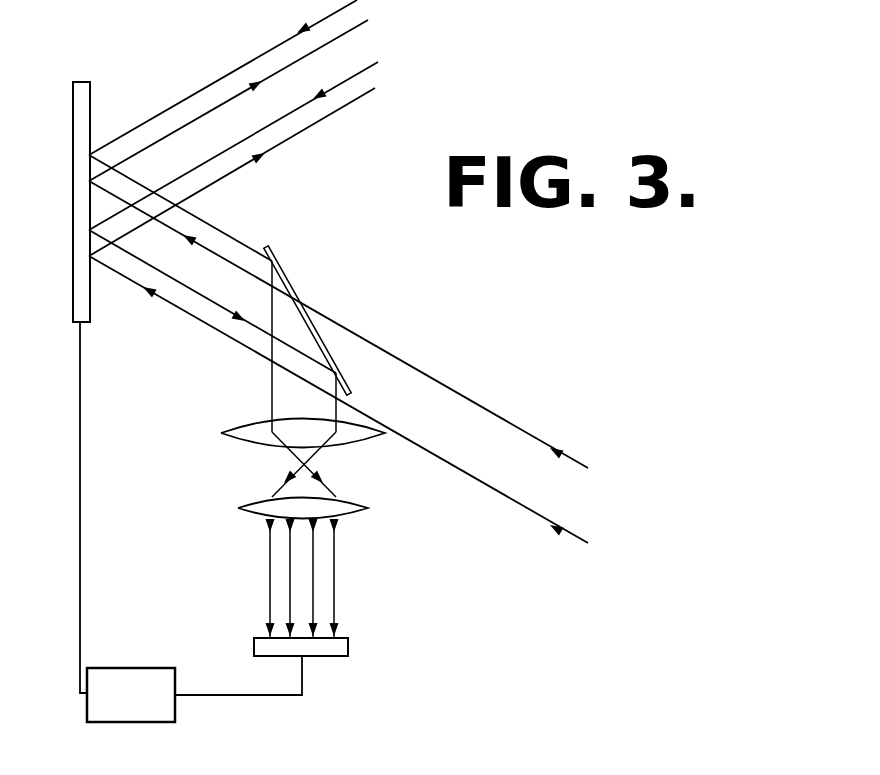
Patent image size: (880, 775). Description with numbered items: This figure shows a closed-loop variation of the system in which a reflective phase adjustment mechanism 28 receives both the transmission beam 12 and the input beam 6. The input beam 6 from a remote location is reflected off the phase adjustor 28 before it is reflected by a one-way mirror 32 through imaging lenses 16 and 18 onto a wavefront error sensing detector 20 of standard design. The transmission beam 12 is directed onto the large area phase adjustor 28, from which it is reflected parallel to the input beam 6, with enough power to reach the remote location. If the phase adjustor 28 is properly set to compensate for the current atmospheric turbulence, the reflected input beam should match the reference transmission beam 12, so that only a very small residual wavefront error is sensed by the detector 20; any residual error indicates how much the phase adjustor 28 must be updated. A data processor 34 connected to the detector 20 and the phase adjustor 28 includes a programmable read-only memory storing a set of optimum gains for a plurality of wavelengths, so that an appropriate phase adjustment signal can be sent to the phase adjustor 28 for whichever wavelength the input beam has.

The input beam 6 is at (283, 44).
The transmission beam 12 is at (468, 398).
The imaging lens 16 is at (248, 422).
The imaging lens 18 is at (262, 505).
The wavefront error sensing detector 20 is at (348, 650).
The phase adjustment mechanism 28 is at (77, 133).
The one-way mirror 32 is at (295, 287).
The data processor 34 is at (143, 672).